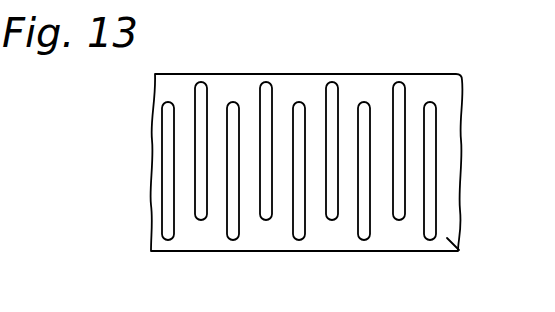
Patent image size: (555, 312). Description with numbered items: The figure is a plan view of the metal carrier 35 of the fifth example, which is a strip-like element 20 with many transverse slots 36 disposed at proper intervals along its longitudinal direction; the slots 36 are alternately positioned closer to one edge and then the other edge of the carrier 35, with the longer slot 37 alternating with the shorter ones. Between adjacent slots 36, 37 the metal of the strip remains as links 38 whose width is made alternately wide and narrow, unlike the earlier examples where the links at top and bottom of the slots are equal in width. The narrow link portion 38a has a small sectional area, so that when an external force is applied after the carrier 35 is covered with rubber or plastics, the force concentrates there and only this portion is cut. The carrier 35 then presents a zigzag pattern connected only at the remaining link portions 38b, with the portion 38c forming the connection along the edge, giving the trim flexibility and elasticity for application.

The wall member plate 20 is at (326, 254).
The metal carrier 35 is at (273, 192).
The transverse slot 36 is at (303, 112).
The short slot 37 is at (263, 78).
The strip between slots 38 is at (452, 95).
The narrow link portion 38a is at (405, 80).
The link portion 38b is at (362, 84).
The strip portion 38c is at (377, 83).